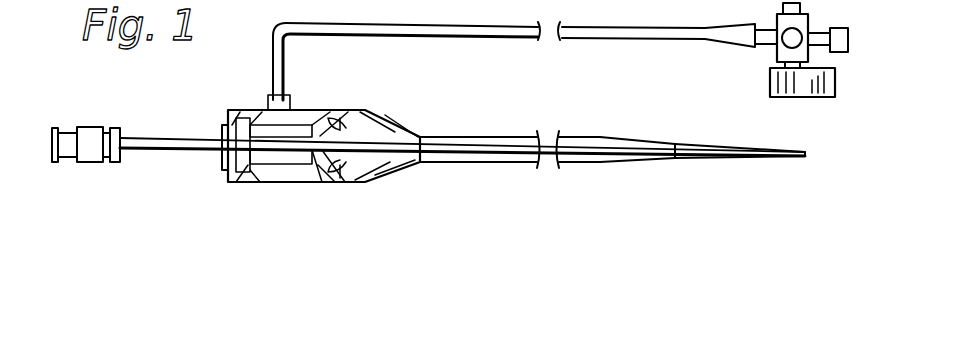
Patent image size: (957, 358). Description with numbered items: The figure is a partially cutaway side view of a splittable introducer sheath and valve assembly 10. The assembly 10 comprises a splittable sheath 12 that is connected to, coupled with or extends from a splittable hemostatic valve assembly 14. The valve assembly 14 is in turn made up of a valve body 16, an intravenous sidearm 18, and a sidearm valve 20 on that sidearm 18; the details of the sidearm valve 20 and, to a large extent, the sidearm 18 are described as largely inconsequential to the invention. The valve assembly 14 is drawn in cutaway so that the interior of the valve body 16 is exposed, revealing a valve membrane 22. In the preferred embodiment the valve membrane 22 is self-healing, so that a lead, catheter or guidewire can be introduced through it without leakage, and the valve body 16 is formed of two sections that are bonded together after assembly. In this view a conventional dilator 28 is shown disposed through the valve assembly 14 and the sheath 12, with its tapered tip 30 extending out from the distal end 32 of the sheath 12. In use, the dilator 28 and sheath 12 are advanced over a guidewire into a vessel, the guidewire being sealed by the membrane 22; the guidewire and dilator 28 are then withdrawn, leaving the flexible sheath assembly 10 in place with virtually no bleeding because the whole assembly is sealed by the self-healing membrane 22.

The splittable introducer sheath and valve assembly 10 is at (518, 208).
The splittable sheath 12 is at (606, 168).
The splittable hemostatic valve assembly 14 is at (315, 197).
The valve body 16 is at (340, 118).
The intravenous sidearm 18 is at (268, 100).
The sidearm valve 20 is at (774, 48).
The valve membrane 22 is at (226, 170).
The dilator 28 is at (140, 149).
The tapered tip 30 is at (796, 160).
The distal end 32 is at (700, 106).